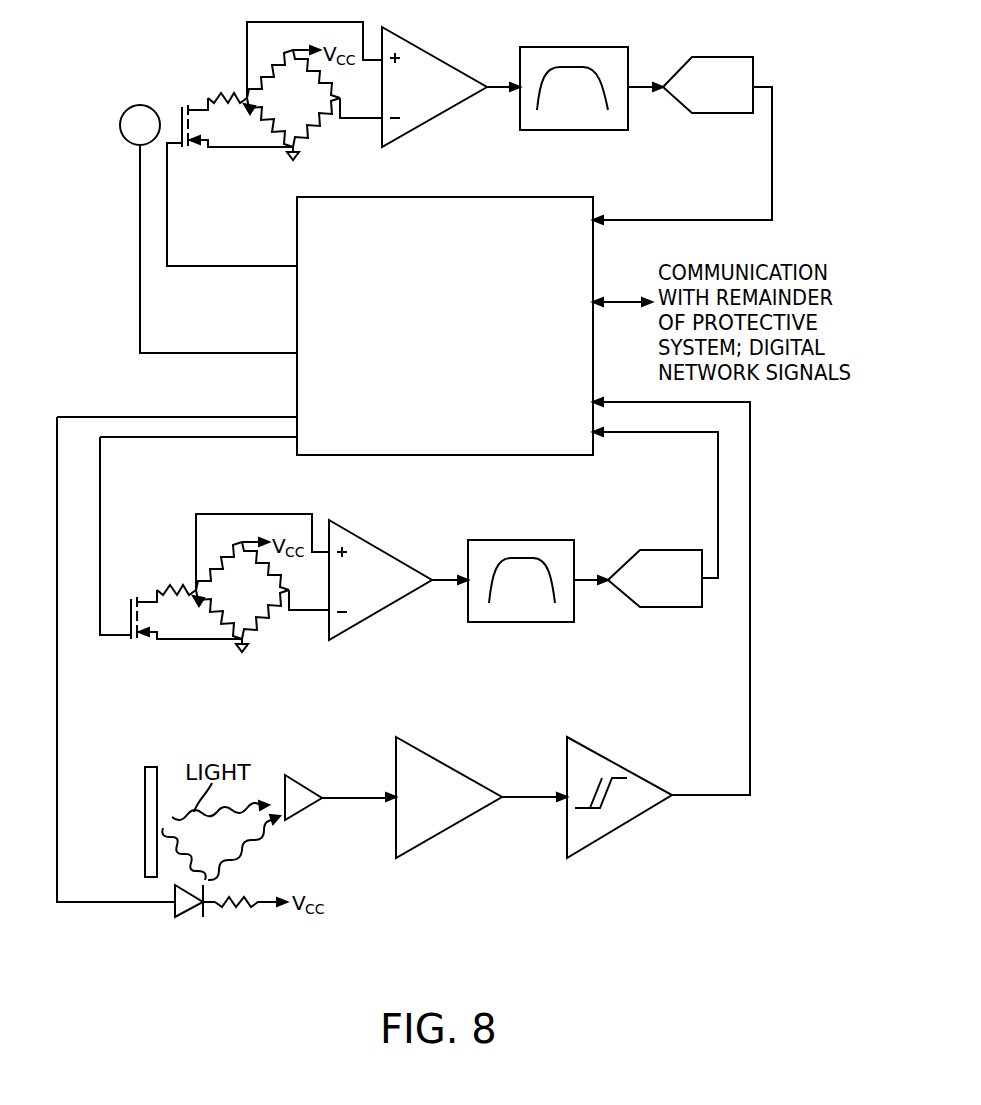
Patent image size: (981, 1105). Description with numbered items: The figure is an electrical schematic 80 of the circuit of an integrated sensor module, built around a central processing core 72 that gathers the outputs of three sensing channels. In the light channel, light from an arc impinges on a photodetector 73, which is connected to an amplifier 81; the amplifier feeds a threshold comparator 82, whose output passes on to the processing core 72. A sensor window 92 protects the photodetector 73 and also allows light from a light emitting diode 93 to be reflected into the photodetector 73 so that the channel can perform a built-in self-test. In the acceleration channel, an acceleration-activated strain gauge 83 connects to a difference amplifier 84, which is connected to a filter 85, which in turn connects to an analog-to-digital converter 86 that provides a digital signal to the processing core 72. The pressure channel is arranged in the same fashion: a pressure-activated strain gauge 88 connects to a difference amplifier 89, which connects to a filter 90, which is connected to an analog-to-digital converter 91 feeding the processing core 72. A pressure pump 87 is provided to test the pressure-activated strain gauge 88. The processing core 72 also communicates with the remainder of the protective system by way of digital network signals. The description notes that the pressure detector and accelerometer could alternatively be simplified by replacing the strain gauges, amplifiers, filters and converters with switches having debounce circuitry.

The processing core 72 is at (580, 203).
The photodetector 73 is at (300, 790).
The electrical schematic 80 is at (100, 948).
The amplifier 81 is at (440, 770).
The threshold comparator 82 is at (590, 755).
The acceleration-activated strain gauge 83 is at (246, 592).
The difference amplifier 84 is at (375, 550).
The filter 85 is at (527, 541).
The analog-to-digital converter 86 is at (657, 551).
The pressure pump 87 is at (121, 125).
The pressure-activated strain gauge 88 is at (297, 100).
The difference amplifier 89 is at (428, 56).
The filter 90 is at (580, 48).
The analog-to-digital converter 91 is at (710, 58).
The sensor window 92 is at (146, 790).
The light emitting diode 93 is at (196, 912).